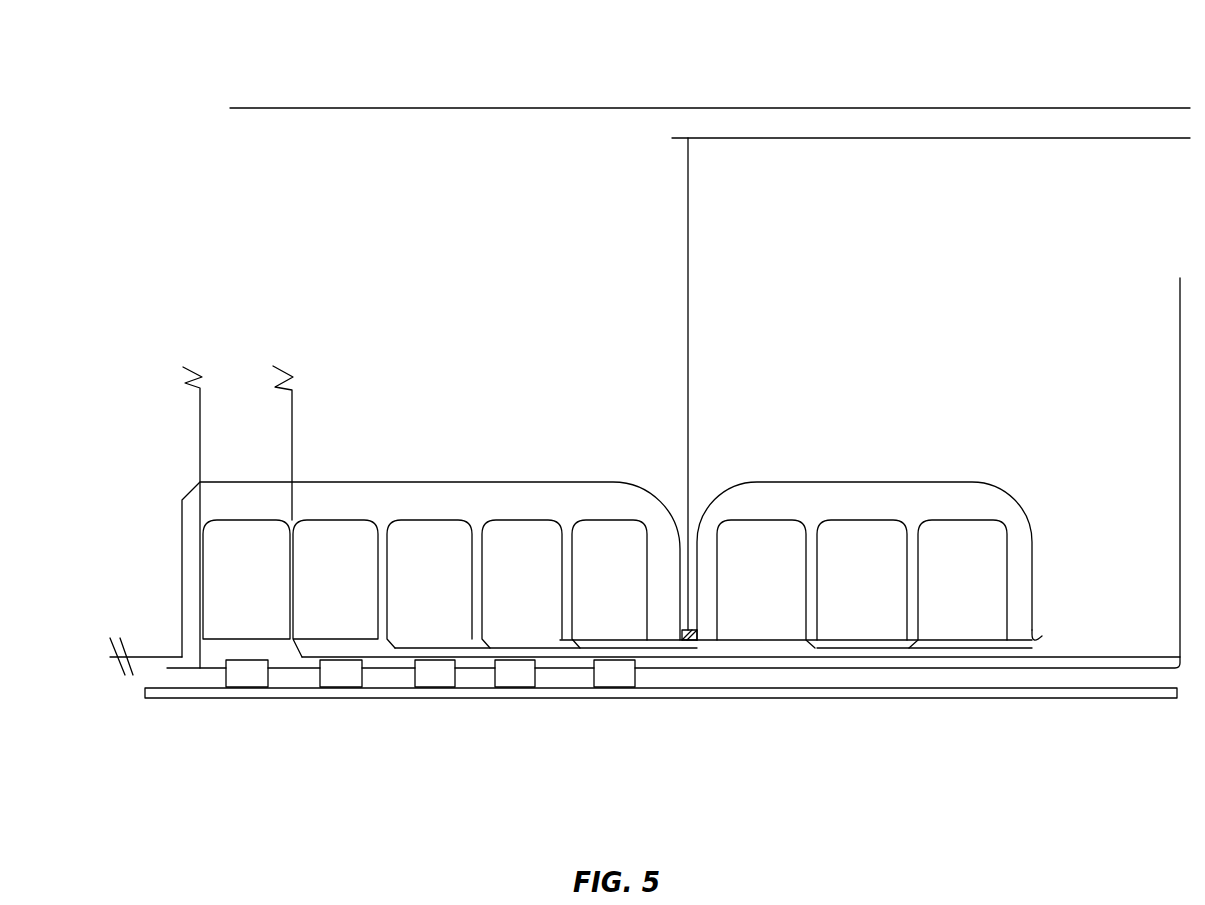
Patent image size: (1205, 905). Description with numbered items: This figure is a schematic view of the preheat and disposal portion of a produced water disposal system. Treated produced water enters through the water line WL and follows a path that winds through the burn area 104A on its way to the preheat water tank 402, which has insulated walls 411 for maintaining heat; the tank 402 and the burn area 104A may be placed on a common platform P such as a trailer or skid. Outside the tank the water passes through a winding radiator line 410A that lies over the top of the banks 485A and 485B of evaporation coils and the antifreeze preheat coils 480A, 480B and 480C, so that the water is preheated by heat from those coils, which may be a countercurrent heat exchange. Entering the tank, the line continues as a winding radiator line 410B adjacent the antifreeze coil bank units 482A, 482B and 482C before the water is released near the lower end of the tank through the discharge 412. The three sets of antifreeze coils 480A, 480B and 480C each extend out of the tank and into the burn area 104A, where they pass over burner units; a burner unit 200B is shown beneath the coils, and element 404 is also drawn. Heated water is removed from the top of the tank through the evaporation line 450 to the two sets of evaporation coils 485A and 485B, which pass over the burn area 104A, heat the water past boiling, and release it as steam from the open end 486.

The burn area 104A is at (470, 806).
The preheat water tank 402 is at (1016, 158).
The insulated walls 411 is at (812, 137).
The contact via 404 is at (688, 290).
The evaporation line 450 is at (1178, 266).
The open end 486 is at (210, 358).
The water line WL is at (158, 655).
The winding radiator line 410A is at (535, 480).
The winding radiator line 410B is at (870, 480).
The discharge 412 is at (1054, 612).
The evaporation coils 485A is at (263, 621).
The evaporation coils 485B is at (350, 622).
The antifreeze preheat coils 480A is at (437, 622).
The antifreeze preheat coils 480B is at (523, 622).
The antifreeze preheat coils 480C is at (597, 620).
The doped region 200B is at (612, 673).
The antifreeze coil bank unit 482A is at (762, 623).
The antifreeze coil bank unit 482B is at (851, 623).
The antifreeze coil bank unit 482C is at (963, 630).
The common platform P is at (897, 697).